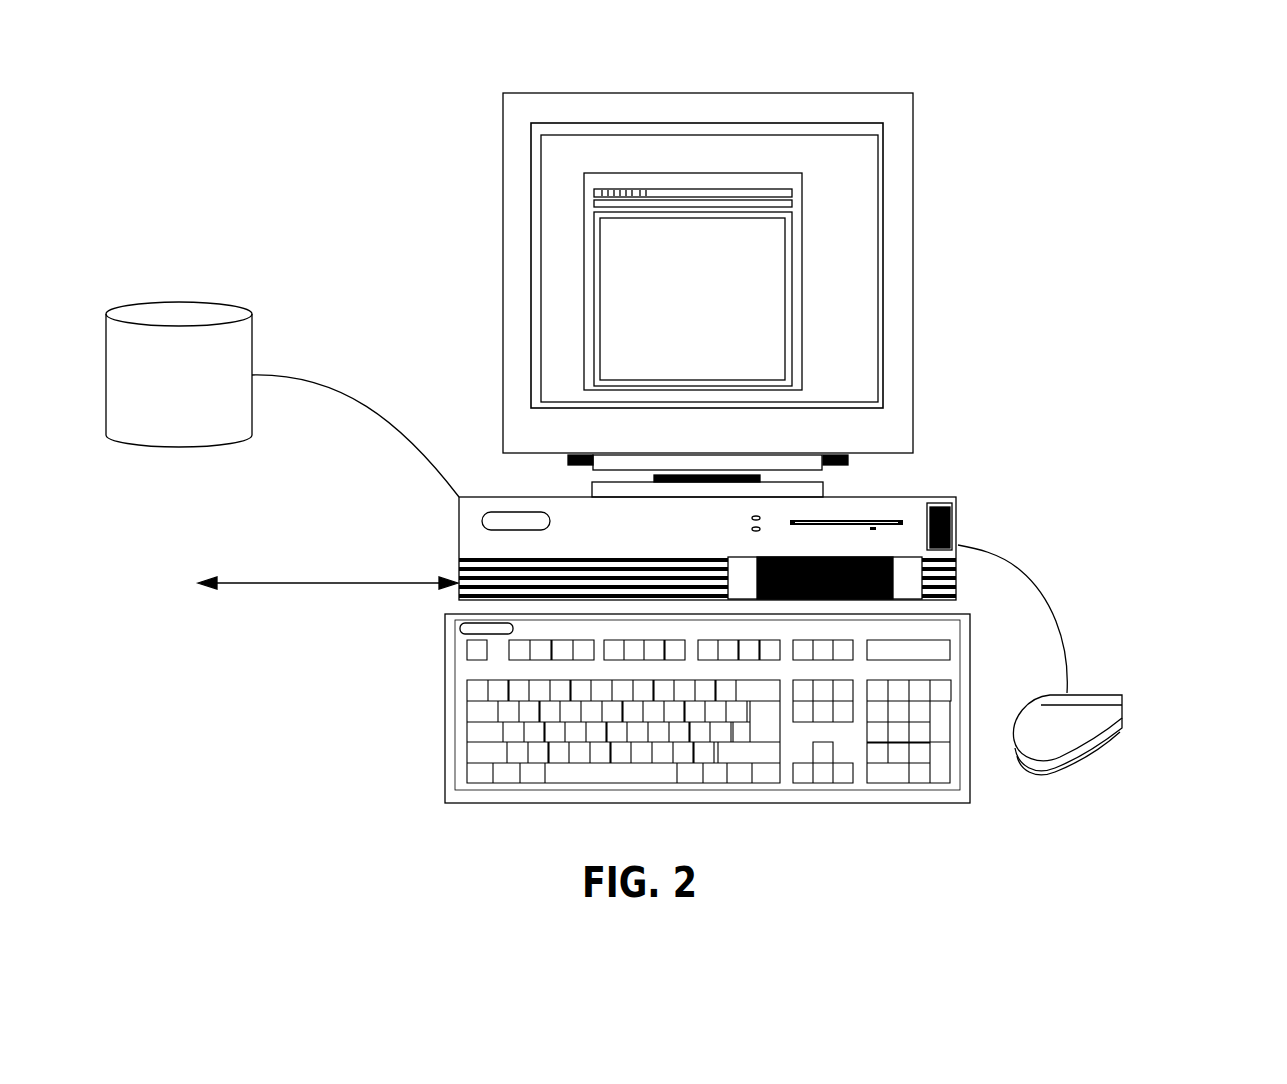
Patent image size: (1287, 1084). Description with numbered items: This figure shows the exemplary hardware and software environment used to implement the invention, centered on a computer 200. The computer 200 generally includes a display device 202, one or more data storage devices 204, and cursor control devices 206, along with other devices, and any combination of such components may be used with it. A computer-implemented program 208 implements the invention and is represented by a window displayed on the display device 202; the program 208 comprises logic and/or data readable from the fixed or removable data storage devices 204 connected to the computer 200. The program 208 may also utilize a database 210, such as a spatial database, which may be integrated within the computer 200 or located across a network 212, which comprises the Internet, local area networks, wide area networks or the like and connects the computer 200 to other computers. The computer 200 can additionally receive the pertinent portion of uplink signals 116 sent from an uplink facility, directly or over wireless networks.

The display device 202 is at (913, 130).
The program 208 is at (802, 280).
The computer 200 is at (962, 516).
The data storage devices 204 is at (887, 521).
The cursor control devices 206 is at (1108, 777).
The database 210 is at (282, 406).
The network 212 is at (328, 557).
The uplink signals 116 is at (128, 594).